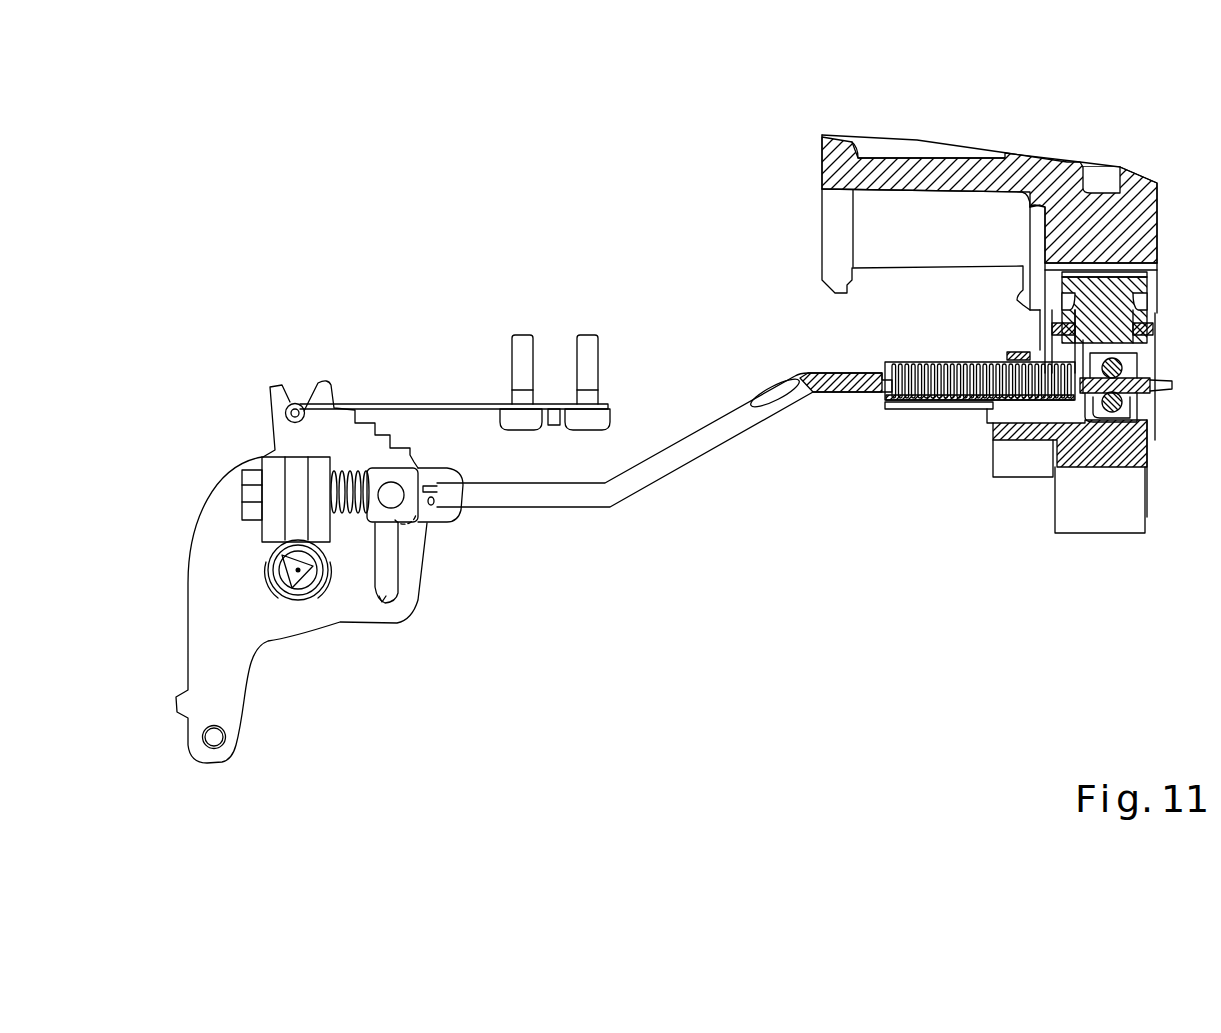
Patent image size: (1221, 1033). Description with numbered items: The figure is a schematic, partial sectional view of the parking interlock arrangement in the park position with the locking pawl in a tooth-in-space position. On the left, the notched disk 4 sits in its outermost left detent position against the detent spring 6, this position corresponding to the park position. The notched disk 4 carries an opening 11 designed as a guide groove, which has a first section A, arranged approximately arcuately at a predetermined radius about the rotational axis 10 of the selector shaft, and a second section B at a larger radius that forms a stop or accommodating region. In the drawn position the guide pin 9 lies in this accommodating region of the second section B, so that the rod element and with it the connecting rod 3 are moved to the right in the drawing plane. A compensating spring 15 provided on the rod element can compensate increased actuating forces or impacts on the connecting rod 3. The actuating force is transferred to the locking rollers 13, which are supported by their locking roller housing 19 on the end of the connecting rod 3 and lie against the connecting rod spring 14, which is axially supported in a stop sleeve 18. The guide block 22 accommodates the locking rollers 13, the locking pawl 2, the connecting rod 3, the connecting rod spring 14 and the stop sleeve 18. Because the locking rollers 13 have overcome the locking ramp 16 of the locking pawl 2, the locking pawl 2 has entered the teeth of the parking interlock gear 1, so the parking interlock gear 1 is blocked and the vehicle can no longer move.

The parking interlock gear 1 is at (1110, 230).
The locking pawl 2 is at (1110, 305).
The connecting rod 3 is at (707, 445).
The notched disk 4 is at (225, 520).
The detent spring 6 is at (470, 403).
The guide pin 9 is at (392, 488).
The rotational axis 10 is at (297, 592).
The opening 11 is at (390, 555).
The locking rollers 13 is at (1050, 348).
The connecting rod spring 14 is at (933, 403).
The compensating spring 15 is at (362, 478).
The locking ramp 16 is at (1053, 350).
The stop sleeve 18 is at (905, 410).
The locking roller housing 19 is at (1073, 413).
The guide block 22 is at (1112, 463).
The first section A is at (382, 598).
The second section B is at (407, 512).